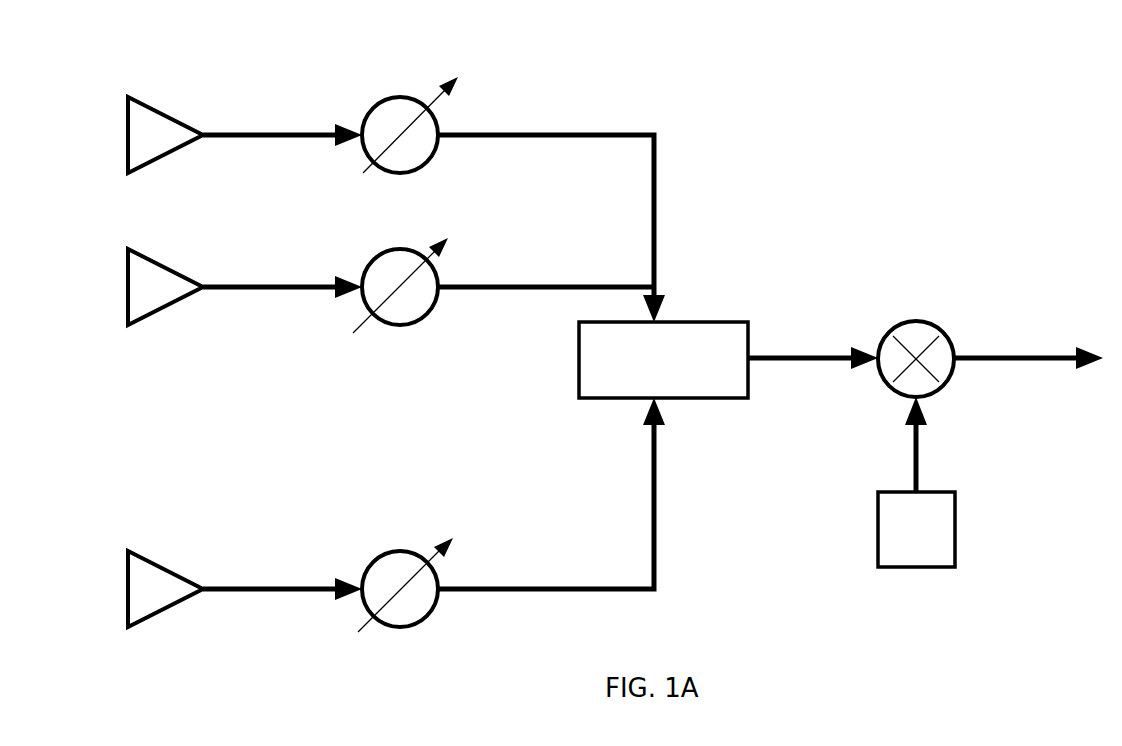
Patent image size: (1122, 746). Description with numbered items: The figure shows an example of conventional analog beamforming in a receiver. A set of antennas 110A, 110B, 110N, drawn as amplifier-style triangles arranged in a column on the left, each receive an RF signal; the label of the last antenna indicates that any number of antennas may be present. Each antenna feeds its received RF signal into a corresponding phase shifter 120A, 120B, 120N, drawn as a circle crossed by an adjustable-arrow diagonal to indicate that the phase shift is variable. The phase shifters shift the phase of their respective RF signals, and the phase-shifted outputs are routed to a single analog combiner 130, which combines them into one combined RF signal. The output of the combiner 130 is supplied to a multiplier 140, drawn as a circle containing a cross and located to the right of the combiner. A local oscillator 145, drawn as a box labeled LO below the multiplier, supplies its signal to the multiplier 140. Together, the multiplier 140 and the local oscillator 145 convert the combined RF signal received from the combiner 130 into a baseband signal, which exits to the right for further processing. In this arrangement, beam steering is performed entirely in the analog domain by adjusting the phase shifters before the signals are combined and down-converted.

The antenna 110A is at (125, 135).
The antenna 110B is at (125, 287).
The antenna 110N is at (125, 589).
The phase shifter 120A is at (408, 97).
The phase shifter 120B is at (402, 249).
The phase shifter 120N is at (402, 551).
The combiner 130 is at (710, 320).
The multiplier 140 is at (918, 321).
The local oscillator 145 is at (955, 538).